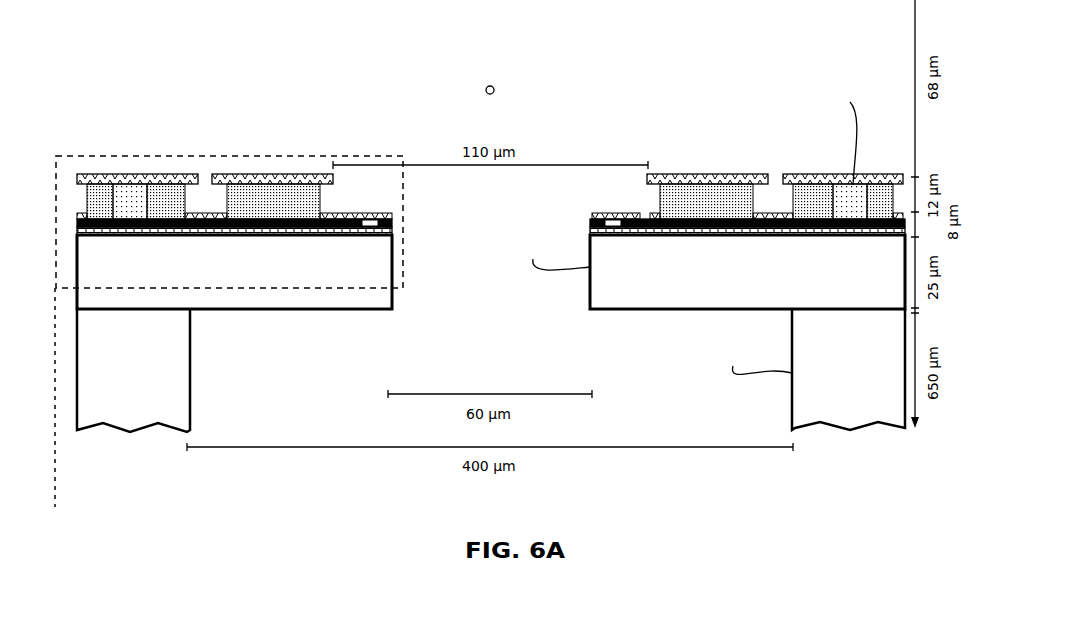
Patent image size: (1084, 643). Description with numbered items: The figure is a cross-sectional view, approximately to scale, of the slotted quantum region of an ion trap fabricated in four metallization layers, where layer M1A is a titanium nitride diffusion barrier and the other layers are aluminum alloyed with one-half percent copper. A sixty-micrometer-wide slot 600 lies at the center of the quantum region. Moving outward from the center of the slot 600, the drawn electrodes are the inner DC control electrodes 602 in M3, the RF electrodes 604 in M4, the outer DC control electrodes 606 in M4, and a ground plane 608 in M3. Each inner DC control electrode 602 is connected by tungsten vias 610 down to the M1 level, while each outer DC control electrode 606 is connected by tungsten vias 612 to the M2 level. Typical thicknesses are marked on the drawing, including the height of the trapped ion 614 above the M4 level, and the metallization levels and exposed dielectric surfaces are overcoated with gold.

The slot 600 is at (474, 296).
The DC control electrodes 602 is at (617, 212).
The RF electrodes 604 is at (703, 175).
The DC control electrodes 606 is at (787, 175).
The ground plane 608 is at (892, 213).
The tungsten vias 610 is at (637, 228).
The tungsten vias 612 is at (847, 210).
The trapped ion 614 is at (486, 87).